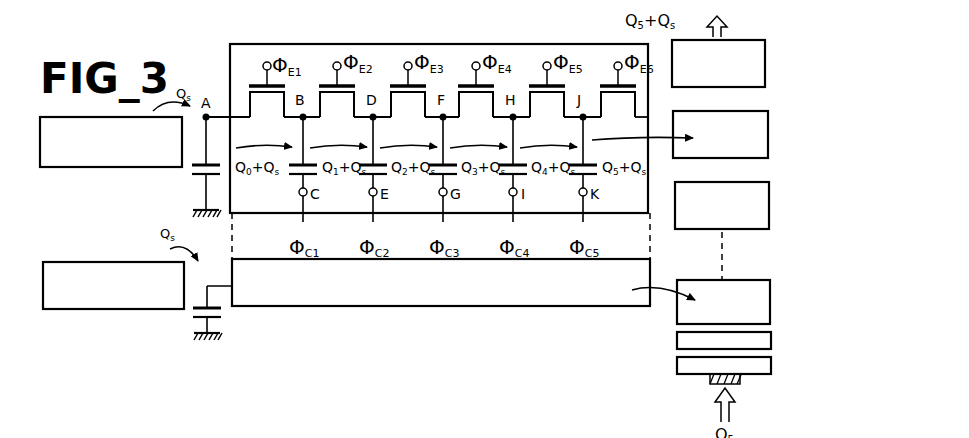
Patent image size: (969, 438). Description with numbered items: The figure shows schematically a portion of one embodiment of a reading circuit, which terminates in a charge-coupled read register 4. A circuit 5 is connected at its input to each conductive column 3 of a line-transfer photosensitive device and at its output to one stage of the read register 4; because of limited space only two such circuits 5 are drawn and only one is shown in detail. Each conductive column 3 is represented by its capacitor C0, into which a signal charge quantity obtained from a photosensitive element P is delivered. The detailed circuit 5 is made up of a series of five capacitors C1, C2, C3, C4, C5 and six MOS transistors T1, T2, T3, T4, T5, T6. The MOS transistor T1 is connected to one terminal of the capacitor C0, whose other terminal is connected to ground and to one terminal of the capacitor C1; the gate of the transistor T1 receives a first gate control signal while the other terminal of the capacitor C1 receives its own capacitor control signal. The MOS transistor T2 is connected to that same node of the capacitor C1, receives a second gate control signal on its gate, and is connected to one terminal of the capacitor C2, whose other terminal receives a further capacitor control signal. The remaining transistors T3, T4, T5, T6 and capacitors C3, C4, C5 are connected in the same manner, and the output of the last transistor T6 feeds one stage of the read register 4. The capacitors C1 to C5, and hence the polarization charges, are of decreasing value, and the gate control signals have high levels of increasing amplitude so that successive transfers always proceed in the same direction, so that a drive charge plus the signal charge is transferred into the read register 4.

The conductive column 3 is at (223, 109).
The charge-coupled read register 4 is at (770, 300).
The circuit 5 is at (230, 50).
The photosensitive element P is at (112, 169).
The capacitor C0 is at (192, 177).
The MOS transistor T1 is at (265, 99).
The MOS transistor T2 is at (335, 99).
The MOS transistor T3 is at (406, 99).
The MOS transistor T4 is at (474, 99).
The MOS transistor T5 is at (545, 99).
The MOS transistor T6 is at (616, 99).
The capacitor C1 is at (291, 179).
The capacitor C2 is at (361, 179).
The capacitor C3 is at (431, 179).
The capacitor C4 is at (501, 179).
The capacitor C5 is at (571, 179).